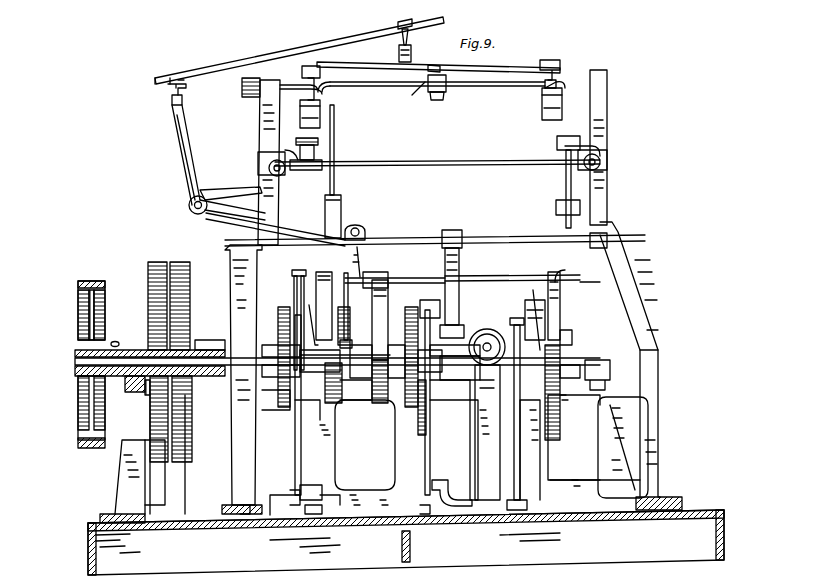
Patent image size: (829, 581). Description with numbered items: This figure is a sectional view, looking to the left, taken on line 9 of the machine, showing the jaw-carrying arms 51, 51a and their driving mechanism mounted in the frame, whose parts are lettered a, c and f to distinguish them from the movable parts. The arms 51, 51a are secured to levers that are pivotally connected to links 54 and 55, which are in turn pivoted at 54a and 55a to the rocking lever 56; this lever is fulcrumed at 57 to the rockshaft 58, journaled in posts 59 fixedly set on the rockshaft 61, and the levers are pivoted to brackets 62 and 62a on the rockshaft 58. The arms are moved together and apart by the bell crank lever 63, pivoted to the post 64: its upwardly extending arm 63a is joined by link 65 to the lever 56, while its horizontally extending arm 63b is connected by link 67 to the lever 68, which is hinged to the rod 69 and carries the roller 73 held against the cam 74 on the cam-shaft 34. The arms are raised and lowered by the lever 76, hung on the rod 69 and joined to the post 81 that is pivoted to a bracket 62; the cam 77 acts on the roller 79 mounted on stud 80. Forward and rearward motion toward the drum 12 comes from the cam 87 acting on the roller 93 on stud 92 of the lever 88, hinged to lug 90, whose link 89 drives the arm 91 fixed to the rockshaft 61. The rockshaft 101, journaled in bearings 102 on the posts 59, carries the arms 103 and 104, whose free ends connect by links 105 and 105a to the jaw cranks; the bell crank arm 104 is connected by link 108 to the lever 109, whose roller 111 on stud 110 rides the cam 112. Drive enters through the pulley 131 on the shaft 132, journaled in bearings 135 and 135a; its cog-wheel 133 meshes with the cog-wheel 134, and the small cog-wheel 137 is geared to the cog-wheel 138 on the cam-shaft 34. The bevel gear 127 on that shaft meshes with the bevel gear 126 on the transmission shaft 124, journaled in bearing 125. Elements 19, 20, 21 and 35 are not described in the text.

The frame part a is at (406, 485).
The section line 9 is at (452, 368).
The drum 12 is at (648, 440).
The link 65 is at (300, 55).
The upwardly extending arm 63a is at (184, 160).
The bell crank lever 63 is at (222, 195).
The post 64 is at (198, 214).
The horizontally extending arm 63b is at (302, 215).
The posts 59 is at (266, 125).
The rockshaft 58 is at (242, 88).
The link 55 is at (360, 62).
The pivot 55a is at (440, 66).
The rocking lever 56 is at (410, 45).
The link 54 is at (476, 82).
The pivot 54a is at (440, 100).
The fulcrum 57 is at (412, 92).
The bracket 62a is at (335, 90).
The jaw carrying arm 51a is at (312, 108).
The bracket 62 is at (545, 90).
The jaw carrying arm 51 is at (542, 104).
The rockshaft 101 is at (436, 160).
The bearings 102 is at (258, 160).
The link 105a is at (284, 172).
The link 105 is at (600, 166).
The arm 103 is at (318, 140).
The post 81 is at (341, 185).
The bell crank lever arm 104 is at (566, 182).
The rockshaft 61 is at (496, 236).
The link 67 is at (362, 262).
The lever 68 is at (385, 268).
The roller 73 is at (400, 276).
The rod 69 is at (480, 275).
The link 108 is at (552, 262).
The roller 79 is at (322, 272).
The rods 21 is at (294, 300).
The frame part c is at (422, 315).
The gear 35 is at (278, 315).
The stud 80 is at (358, 305).
The lever 76 is at (356, 322).
The cam 74 is at (383, 320).
The roller 93 is at (404, 392).
The cam 87 is at (418, 410).
The cam 77 is at (325, 395).
The rod 19 is at (295, 443).
The pivot bracket 20 is at (322, 495).
The link 89 is at (432, 318).
The arm 91 is at (470, 298).
The lever 88 is at (430, 425).
The lug 90 is at (452, 470).
The cam-shaft 34 is at (462, 345).
The bearing 125 is at (487, 329).
The bevel gear 126 is at (485, 351).
The transmission shaft 124 is at (480, 380).
The stud 92 is at (460, 368).
The bevel gear 127 is at (514, 402).
The roller 111 is at (525, 305).
The lever 109 is at (560, 285).
The stud 110 is at (572, 332).
The cam 112 is at (560, 385).
The shaft 132 is at (75, 362).
The cog-wheel 133 is at (150, 344).
The bearing 135 is at (200, 340).
The bearing 135a is at (128, 350).
The pulley 131 is at (85, 281).
The cog-wheel 134 is at (148, 292).
The cog-wheel 138 is at (190, 290).
The small cog-wheel 137 is at (195, 385).
The frame part f is at (479, 450).